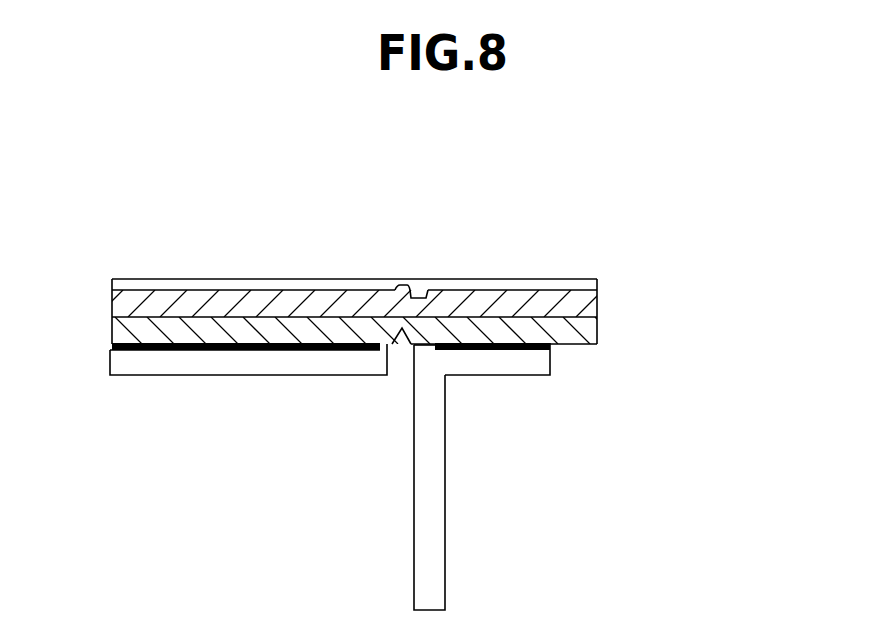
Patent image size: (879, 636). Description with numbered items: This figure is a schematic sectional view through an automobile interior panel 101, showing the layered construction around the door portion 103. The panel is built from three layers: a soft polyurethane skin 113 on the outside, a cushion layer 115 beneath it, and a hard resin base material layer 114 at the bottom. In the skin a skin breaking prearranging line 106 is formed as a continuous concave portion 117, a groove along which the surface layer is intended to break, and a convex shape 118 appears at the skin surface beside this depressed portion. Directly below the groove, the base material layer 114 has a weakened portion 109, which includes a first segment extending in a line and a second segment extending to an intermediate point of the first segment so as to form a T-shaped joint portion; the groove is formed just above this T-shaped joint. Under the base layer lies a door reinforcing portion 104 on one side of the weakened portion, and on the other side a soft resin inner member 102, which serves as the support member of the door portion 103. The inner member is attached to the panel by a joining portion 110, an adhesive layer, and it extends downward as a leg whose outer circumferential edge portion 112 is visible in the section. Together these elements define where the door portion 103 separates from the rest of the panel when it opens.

The interior panel 101 is at (433, 258).
The soft resin inner member 102 is at (535, 415).
The door portion 103 is at (180, 279).
The door reinforcing portion 104 is at (232, 377).
The skin breaking prearranging line 106 is at (349, 261).
The weakened portion of base material layer 109 is at (415, 337).
The joining portion 110 is at (533, 377).
The outer circumferential edge portion 112 is at (478, 377).
The soft polyurethane skin 113 is at (597, 280).
The hard resin base material layer 114 is at (597, 338).
The cushion layer 115 is at (597, 306).
The continuous concave portion 117 is at (401, 336).
The convex shape 118 is at (418, 296).